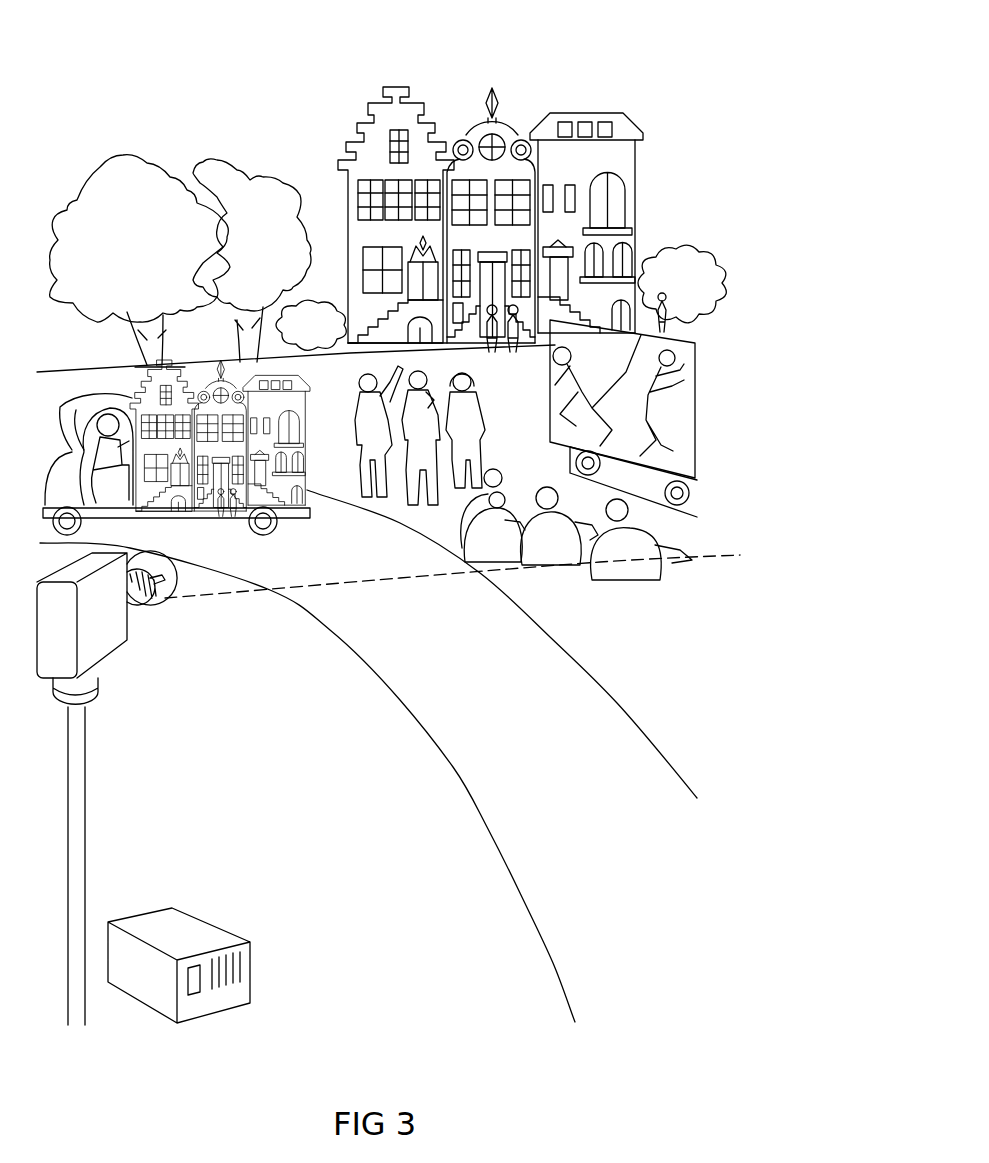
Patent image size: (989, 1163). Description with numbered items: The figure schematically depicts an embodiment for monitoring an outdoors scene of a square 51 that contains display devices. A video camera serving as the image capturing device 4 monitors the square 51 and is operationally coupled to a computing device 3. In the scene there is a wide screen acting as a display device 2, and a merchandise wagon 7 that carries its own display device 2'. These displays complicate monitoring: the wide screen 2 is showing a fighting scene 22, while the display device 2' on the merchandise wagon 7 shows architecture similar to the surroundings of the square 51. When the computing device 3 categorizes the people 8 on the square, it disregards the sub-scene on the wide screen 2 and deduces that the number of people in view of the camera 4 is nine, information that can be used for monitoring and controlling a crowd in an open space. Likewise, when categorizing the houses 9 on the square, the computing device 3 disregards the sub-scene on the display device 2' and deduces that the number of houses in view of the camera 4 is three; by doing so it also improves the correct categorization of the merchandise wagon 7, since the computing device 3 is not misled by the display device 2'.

The display device 2 is at (650, 410).
The display device 2' is at (200, 447).
The computing device 3 is at (235, 932).
The image capturing device 4 is at (110, 660).
The merchandise wagon 7 is at (60, 452).
The people 8 is at (440, 366).
The houses 9 is at (480, 102).
The fighting scene 22 is at (650, 405).
The square 51 is at (130, 540).